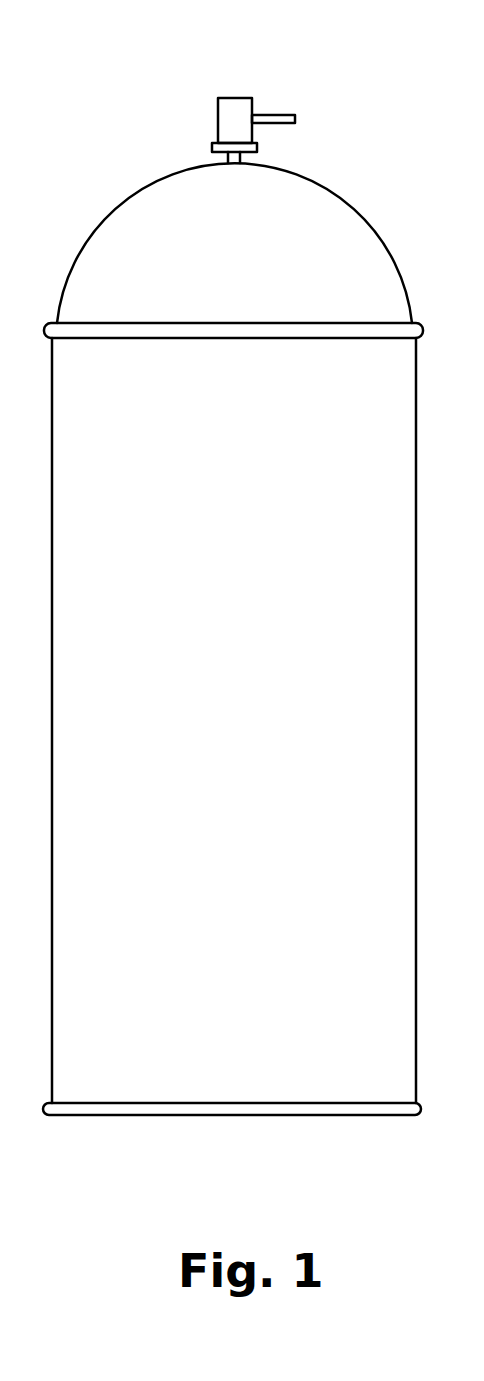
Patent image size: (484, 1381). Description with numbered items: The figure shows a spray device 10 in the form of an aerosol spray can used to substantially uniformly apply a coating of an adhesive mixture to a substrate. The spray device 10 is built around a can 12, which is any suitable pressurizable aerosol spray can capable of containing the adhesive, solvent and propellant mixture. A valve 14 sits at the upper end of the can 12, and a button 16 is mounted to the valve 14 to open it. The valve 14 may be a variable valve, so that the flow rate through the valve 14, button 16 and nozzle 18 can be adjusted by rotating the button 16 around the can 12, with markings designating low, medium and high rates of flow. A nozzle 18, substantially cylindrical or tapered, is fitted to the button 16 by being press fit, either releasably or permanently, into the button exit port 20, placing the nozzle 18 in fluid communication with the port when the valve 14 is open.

The spray device 10 is at (107, 92).
The can 12 is at (355, 403).
The valve 14 is at (197, 177).
The button 16 is at (237, 112).
The nozzle 18 is at (287, 107).
The button exit port 20 is at (257, 110).